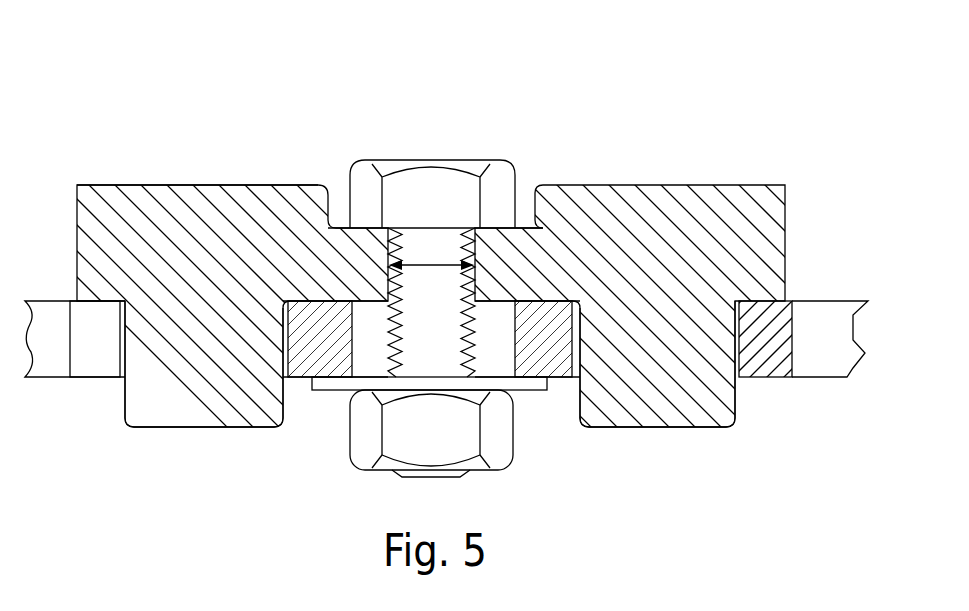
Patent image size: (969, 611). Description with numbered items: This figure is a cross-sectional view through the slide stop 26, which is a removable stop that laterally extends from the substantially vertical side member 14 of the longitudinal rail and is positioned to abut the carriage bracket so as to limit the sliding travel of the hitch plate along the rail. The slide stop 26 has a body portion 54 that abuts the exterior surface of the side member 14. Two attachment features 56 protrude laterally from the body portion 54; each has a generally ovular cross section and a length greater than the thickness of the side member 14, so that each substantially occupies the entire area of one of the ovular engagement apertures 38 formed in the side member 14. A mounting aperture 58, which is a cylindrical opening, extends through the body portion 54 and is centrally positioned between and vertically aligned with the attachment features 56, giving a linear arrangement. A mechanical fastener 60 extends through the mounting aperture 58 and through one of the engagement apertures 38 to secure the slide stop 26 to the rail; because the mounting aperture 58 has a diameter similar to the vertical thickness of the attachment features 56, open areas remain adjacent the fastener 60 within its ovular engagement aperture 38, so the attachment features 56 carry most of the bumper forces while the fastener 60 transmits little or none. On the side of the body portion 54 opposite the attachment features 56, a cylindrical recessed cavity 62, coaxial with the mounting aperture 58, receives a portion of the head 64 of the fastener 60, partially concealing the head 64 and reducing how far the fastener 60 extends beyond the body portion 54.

The substantially vertical side member 14 is at (773, 353).
The slide stop 26 is at (157, 128).
The engagement apertures 38 is at (53, 341).
The body portion 54 is at (750, 242).
The attachment features 56 is at (212, 412).
The mounting aperture 58 is at (433, 262).
The mechanical fastener 60 is at (510, 490).
The recessed cavity 62 is at (525, 202).
The head 64 is at (410, 170).